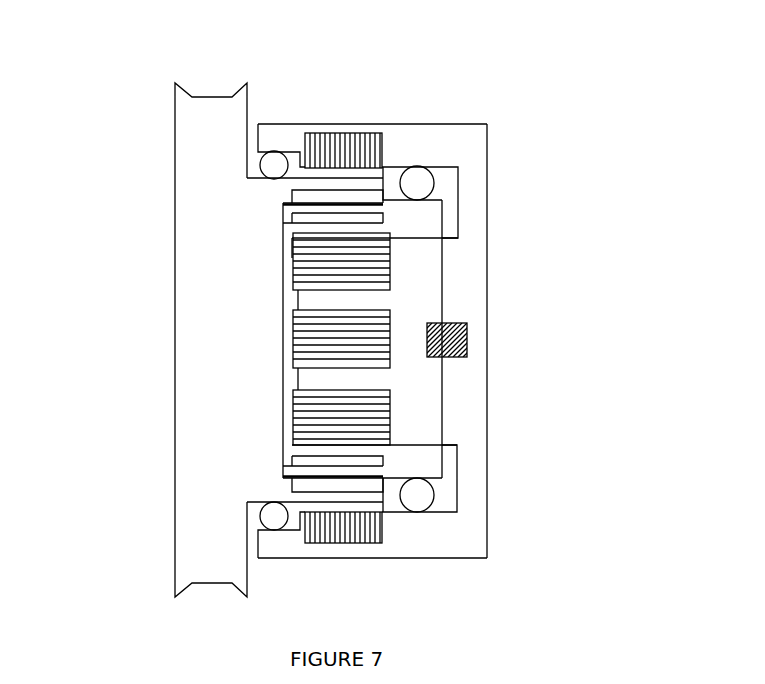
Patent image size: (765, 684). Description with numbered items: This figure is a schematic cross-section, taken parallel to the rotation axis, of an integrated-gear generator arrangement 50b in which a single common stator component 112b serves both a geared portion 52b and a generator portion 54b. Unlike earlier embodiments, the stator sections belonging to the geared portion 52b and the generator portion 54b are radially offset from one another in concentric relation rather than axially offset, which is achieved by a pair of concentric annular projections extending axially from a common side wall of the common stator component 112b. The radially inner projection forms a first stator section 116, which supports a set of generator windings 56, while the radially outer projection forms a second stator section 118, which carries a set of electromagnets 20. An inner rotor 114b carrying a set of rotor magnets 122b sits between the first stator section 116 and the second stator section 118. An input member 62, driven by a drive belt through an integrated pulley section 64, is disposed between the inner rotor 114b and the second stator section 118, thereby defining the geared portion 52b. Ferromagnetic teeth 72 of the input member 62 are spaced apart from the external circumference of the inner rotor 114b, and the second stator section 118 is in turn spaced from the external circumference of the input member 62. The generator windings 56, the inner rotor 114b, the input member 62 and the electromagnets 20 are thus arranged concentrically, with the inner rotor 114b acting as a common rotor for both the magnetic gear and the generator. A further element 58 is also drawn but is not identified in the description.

The integrated-gear generator arrangement 50b is at (110, 42).
The electromagnets 20 is at (327, 148).
The common stator component 112b is at (420, 147).
The geared portion 52b is at (514, 173).
The inner rotor 114b is at (442, 207).
The generator windings 56 is at (380, 272).
The generator portion 54b is at (509, 333).
The spacer block 58 is at (455, 345).
The first stator section 116 is at (420, 407).
The rotor magnets 122b is at (428, 448).
The second stator section 118 is at (443, 530).
The ferromagnetic teeth 72 is at (368, 497).
The input member 62 is at (205, 262).
The integrated pulley section 64 is at (161, 408).